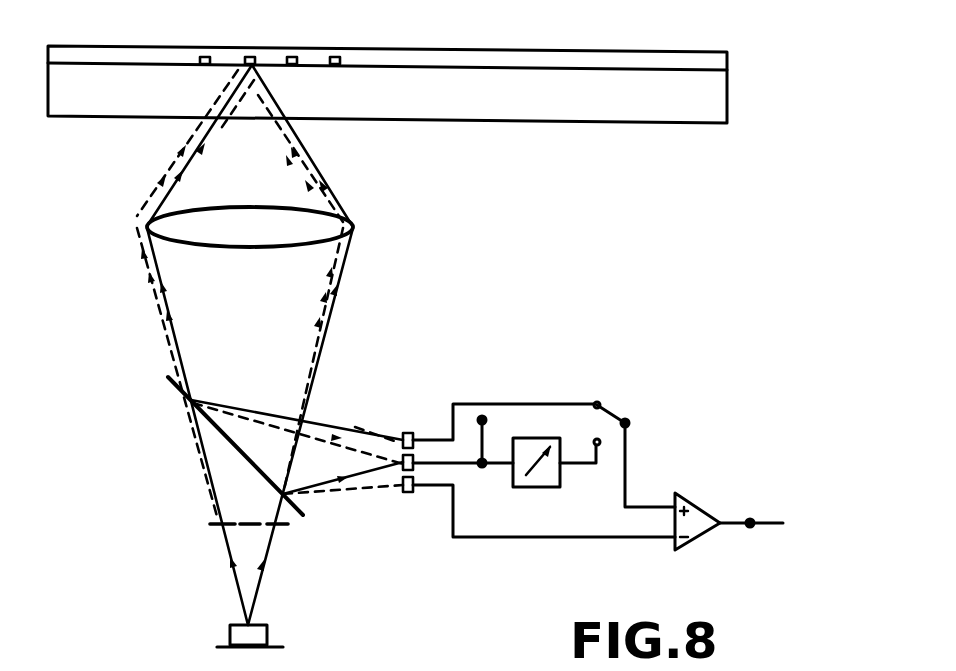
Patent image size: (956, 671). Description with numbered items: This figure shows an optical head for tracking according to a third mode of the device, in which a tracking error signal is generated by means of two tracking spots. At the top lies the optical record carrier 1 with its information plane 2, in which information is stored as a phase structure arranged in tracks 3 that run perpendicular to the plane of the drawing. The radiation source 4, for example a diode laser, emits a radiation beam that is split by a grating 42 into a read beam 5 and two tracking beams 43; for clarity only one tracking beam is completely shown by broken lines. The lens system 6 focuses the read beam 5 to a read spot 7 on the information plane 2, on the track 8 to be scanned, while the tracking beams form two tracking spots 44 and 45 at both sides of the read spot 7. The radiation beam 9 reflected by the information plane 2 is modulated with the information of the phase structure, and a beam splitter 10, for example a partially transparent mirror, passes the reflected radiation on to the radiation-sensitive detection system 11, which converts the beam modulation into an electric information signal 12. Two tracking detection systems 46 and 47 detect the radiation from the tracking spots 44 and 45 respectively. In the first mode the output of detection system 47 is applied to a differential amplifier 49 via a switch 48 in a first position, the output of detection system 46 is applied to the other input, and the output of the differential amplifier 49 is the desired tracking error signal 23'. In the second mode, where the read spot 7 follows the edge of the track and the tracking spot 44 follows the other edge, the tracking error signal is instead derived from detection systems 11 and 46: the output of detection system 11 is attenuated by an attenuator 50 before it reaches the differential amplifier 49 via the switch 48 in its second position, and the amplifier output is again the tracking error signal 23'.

The optical record carrier 1 is at (758, 38).
The information plane 2 is at (635, 68).
The tracks 3 is at (294, 57).
The radiation source 4 is at (268, 637).
The read beam 5 is at (165, 333).
The lens system 6 is at (150, 216).
The read spot 7 is at (240, 84).
The track to be scanned 8 is at (250, 56).
The reflected radiation beam 9 is at (311, 172).
The beam splitter 10 is at (172, 383).
The radiation-sensitive detection system 11 is at (395, 482).
The information signal 12 is at (488, 420).
The grating 42 is at (213, 527).
The tracking beams 43 is at (148, 291).
The tracking spot 44 is at (258, 95).
The tracking spot 45 is at (258, 70).
The tracking detection system 46 is at (410, 493).
The tracking detection system 47 is at (410, 432).
The switch 48 is at (612, 413).
The differential amplifier 49 is at (700, 540).
The attenuator 50 is at (540, 488).
The tracking error signal 23' is at (759, 542).